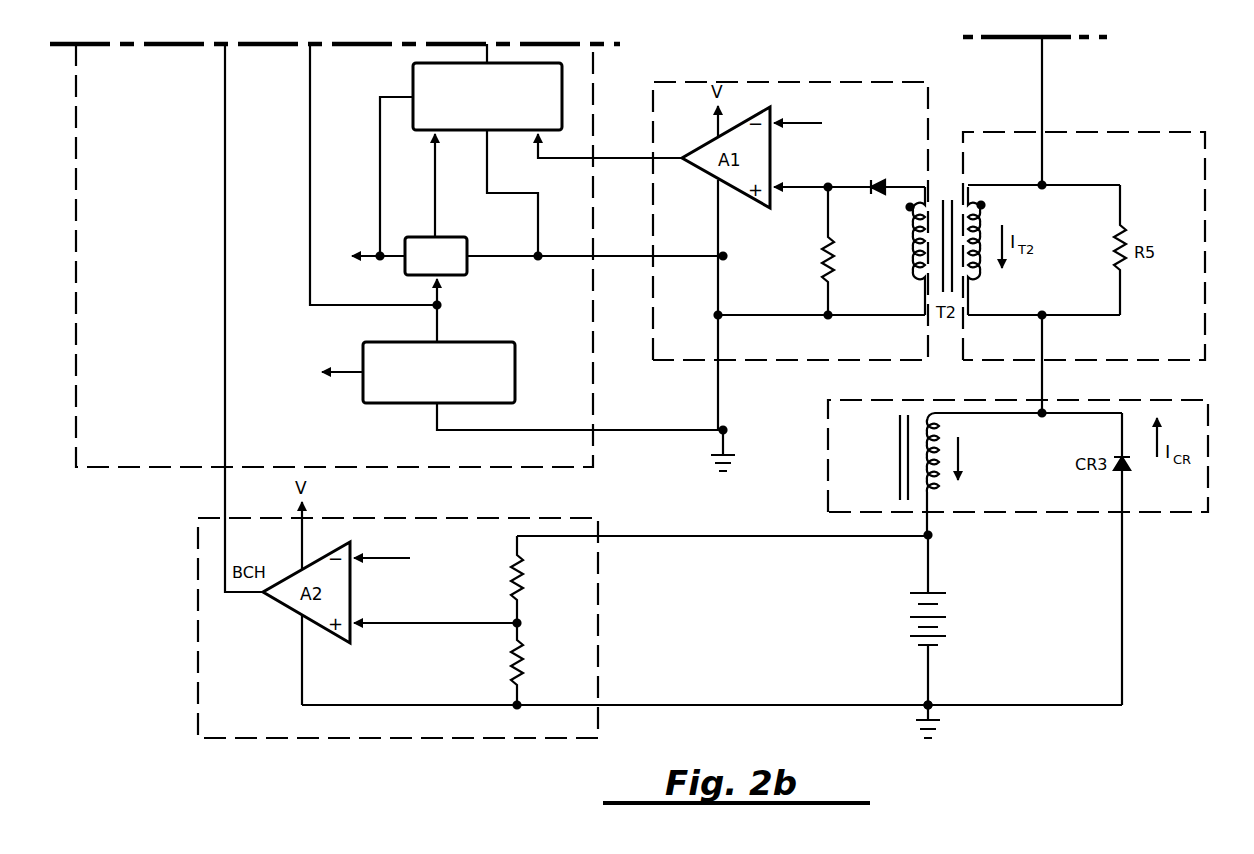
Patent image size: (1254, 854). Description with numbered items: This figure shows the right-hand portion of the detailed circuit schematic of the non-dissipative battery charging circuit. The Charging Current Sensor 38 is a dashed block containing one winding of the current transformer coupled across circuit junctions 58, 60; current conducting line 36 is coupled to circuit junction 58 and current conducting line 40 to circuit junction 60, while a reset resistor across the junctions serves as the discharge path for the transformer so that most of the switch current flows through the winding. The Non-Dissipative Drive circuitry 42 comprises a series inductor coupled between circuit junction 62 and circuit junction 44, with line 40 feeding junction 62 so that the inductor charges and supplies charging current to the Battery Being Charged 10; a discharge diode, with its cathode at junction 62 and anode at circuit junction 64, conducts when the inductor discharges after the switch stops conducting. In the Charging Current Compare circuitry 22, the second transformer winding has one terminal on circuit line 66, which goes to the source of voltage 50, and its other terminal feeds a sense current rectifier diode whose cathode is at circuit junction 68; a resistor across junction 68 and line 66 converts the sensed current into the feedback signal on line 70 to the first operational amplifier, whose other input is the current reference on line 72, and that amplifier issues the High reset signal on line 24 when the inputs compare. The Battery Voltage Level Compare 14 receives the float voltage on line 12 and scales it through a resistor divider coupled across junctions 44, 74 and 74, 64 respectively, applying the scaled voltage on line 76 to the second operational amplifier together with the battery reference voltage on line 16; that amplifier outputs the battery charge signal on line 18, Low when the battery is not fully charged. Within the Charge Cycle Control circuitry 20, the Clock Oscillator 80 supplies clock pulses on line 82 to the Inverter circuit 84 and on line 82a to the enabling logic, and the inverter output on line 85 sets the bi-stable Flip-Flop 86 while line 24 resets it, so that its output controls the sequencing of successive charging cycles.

The battery being charged 10 is at (903, 610).
The line 12 is at (715, 538).
The Battery Voltage Level Compare 14 is at (197, 648).
The line 16 is at (385, 558).
The line 18 is at (225, 182).
The Charge Cycle Control circuitry 20 is at (90, 468).
The Charging Current Compare circuitry 22 is at (822, 82).
The line 24 is at (605, 157).
The line 36 is at (1043, 66).
The Charging Current Sensor 38 is at (1137, 132).
The line 40 is at (1044, 377).
The Non-Dissipative Drive circuitry 42 is at (1180, 513).
The circuit junction 44 is at (933, 535).
The source of voltage 50 is at (728, 443).
The circuit junction 58 is at (1045, 183).
The circuit junction 60 is at (1045, 318).
The circuit junction 62 is at (1042, 416).
The circuit junction 64 is at (932, 704).
The circuit line 66 is at (760, 322).
The circuit junction 68 is at (832, 190).
The line 70 is at (800, 190).
The line 72 is at (797, 123).
The circuit junction 74 is at (522, 622).
The line 76 is at (378, 625).
The Clock Oscillator 80 is at (372, 405).
The line 82 is at (442, 307).
The line 82a is at (310, 138).
The Inverter circuit 84 is at (454, 237).
The line 85 is at (435, 177).
The Flip-Flop 86 is at (413, 72).